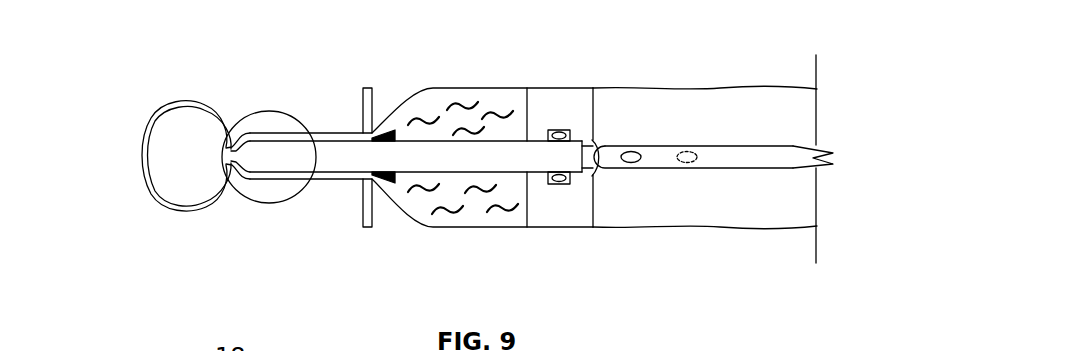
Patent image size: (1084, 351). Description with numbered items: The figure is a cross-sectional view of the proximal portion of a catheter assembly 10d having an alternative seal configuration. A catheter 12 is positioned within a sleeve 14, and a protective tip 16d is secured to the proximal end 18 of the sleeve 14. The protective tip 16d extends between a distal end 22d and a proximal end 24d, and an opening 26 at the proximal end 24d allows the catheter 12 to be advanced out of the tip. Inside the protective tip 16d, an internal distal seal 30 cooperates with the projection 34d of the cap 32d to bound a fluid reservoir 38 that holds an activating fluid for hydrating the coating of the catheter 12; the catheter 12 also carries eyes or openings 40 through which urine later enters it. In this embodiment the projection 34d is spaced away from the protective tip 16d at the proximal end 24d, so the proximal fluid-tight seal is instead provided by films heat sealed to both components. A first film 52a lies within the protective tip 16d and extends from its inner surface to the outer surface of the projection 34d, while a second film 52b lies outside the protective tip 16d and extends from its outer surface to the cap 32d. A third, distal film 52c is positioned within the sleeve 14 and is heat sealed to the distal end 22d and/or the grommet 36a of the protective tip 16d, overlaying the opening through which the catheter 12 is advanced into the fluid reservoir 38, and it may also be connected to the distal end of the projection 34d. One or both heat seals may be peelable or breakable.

The catheter assembly 10d is at (704, 33).
The catheter 12 is at (753, 146).
The sleeve 14 is at (743, 231).
The protective tip 16d is at (447, 84).
The proximal end of the sleeve 18 is at (626, 87).
The distal end of the protective tip 22d is at (558, 228).
The proximal end of the protective tip 24d is at (268, 180).
The opening 26 is at (229, 147).
The internal distal seal 30 is at (558, 129).
The cap 32d is at (148, 103).
The projection 34d is at (484, 174).
The grommet 36a is at (582, 102).
The fluid reservoir 38 is at (511, 104).
The eyes or openings 40 is at (631, 151).
The fluid-tight film 52a is at (392, 185).
The fluid-tight film 52b is at (292, 112).
The fluid-tight film 52c is at (594, 166).